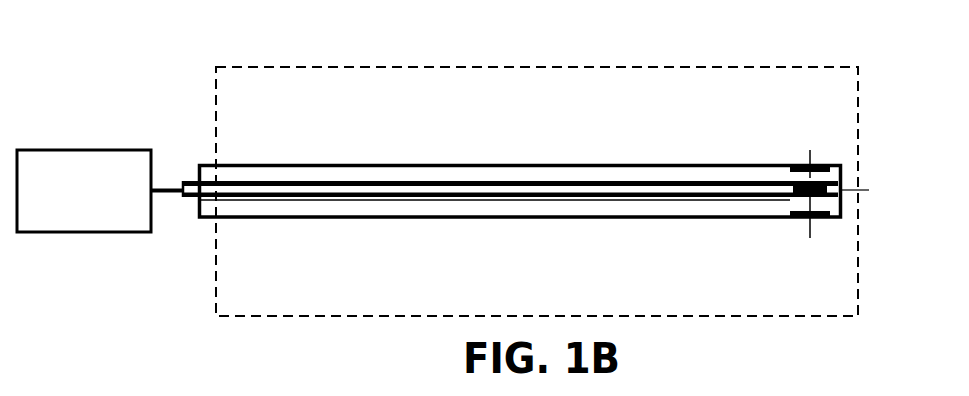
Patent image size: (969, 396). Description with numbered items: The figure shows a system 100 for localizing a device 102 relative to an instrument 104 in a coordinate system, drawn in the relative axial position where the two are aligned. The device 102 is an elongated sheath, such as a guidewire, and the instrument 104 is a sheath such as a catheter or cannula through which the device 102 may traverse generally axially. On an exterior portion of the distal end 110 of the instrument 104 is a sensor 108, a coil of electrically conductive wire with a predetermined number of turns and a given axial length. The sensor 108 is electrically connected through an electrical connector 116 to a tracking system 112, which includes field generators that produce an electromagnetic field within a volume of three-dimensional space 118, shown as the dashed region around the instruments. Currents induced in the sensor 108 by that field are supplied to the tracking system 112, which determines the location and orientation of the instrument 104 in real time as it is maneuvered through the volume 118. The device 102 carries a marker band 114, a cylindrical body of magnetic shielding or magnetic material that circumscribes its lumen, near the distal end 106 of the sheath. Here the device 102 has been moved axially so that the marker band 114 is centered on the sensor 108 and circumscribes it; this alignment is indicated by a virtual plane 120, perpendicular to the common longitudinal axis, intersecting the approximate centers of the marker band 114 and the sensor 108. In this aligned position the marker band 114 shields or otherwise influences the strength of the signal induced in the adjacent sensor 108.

The system 100 is at (801, 33).
The device 102 is at (343, 165).
The instrument 104 is at (788, 197).
The distal end of the sheath 106 is at (842, 208).
The sensor 108 is at (810, 177).
The distal end of the instrument 110 is at (840, 180).
The tracking system 112 is at (107, 149).
The marker band 114 is at (800, 167).
The electrical connector 116 is at (170, 193).
The 3D space volume 118 is at (432, 67).
The virtual plane 120 is at (812, 238).